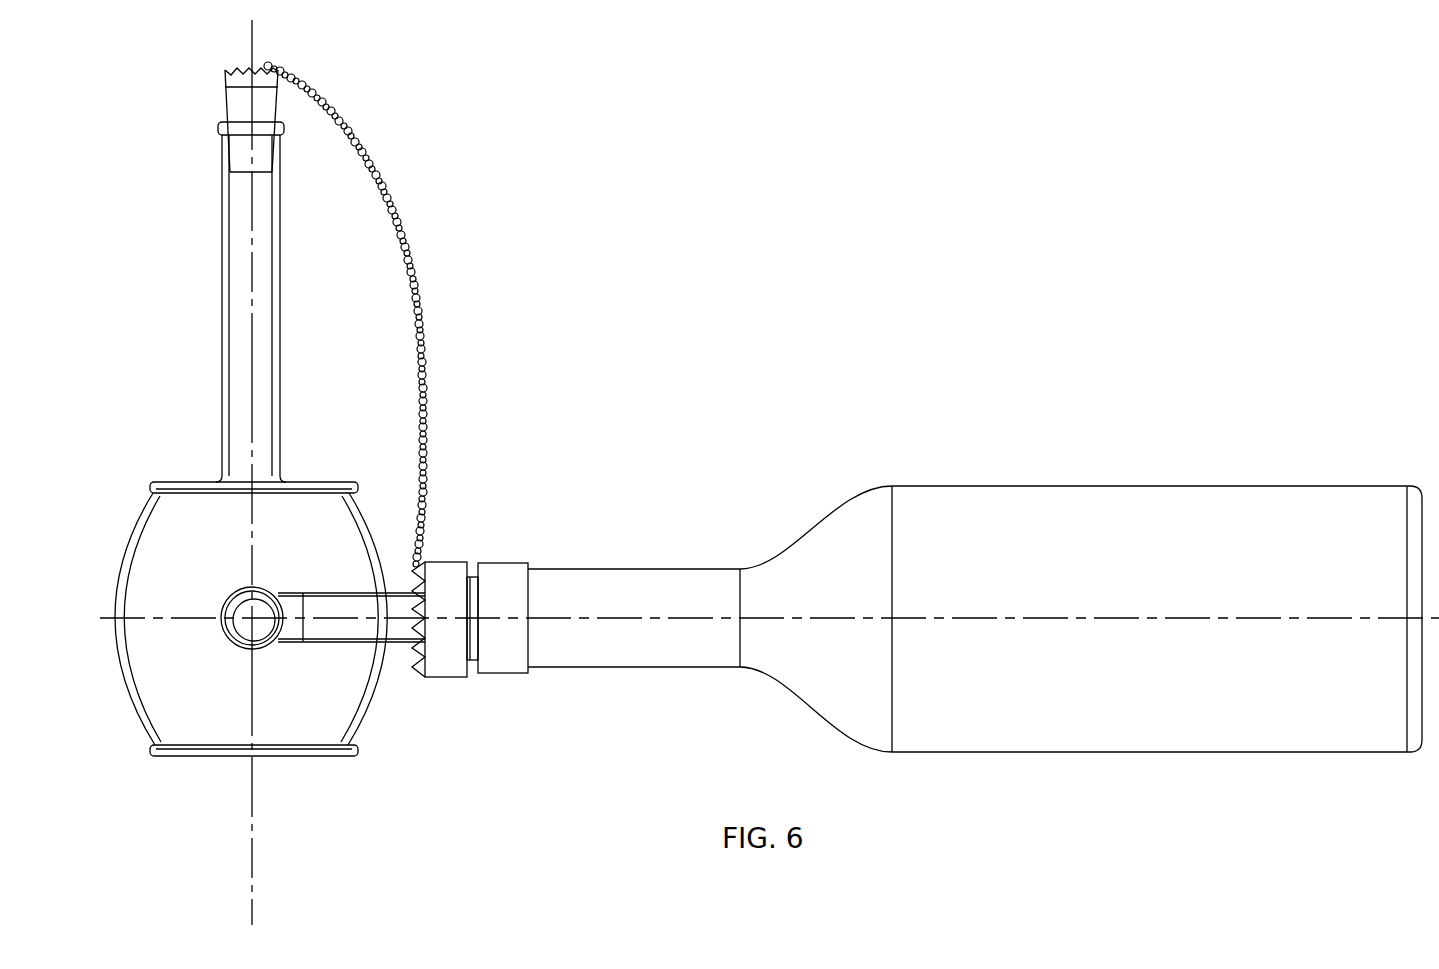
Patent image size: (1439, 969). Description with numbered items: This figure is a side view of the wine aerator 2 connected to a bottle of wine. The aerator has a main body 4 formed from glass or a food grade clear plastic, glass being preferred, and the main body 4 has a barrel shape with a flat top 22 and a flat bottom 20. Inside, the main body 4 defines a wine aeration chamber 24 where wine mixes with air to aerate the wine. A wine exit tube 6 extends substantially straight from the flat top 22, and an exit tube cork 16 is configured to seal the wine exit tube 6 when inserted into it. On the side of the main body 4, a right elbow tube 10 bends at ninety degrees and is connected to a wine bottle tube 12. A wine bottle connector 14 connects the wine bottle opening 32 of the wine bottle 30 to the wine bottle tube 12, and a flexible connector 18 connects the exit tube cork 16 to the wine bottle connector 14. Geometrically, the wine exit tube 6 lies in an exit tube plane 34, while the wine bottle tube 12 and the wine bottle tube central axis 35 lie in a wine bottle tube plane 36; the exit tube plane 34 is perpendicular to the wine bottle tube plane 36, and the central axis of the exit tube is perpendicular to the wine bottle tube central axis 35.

The wine aerator 2 is at (372, 745).
The main body 4 is at (146, 741).
The wine exit tube 6 is at (228, 257).
The right elbow tube 10 is at (243, 594).
The wine bottle tube 12 is at (374, 645).
The wine bottle connector 14 is at (459, 570).
The exit tube cork 16 is at (228, 82).
The flexible connector 18 is at (412, 265).
The flat bottom 20 is at (302, 756).
The flat top 22 is at (198, 480).
The wine aeration chamber 24 is at (198, 695).
The wine bottle 30 is at (975, 565).
The wine bottle opening 32 is at (528, 567).
The exit tube plane 34 is at (252, 885).
The wine bottle tube central axis 35 is at (943, 617).
The wine bottle tube plane 36 is at (690, 618).